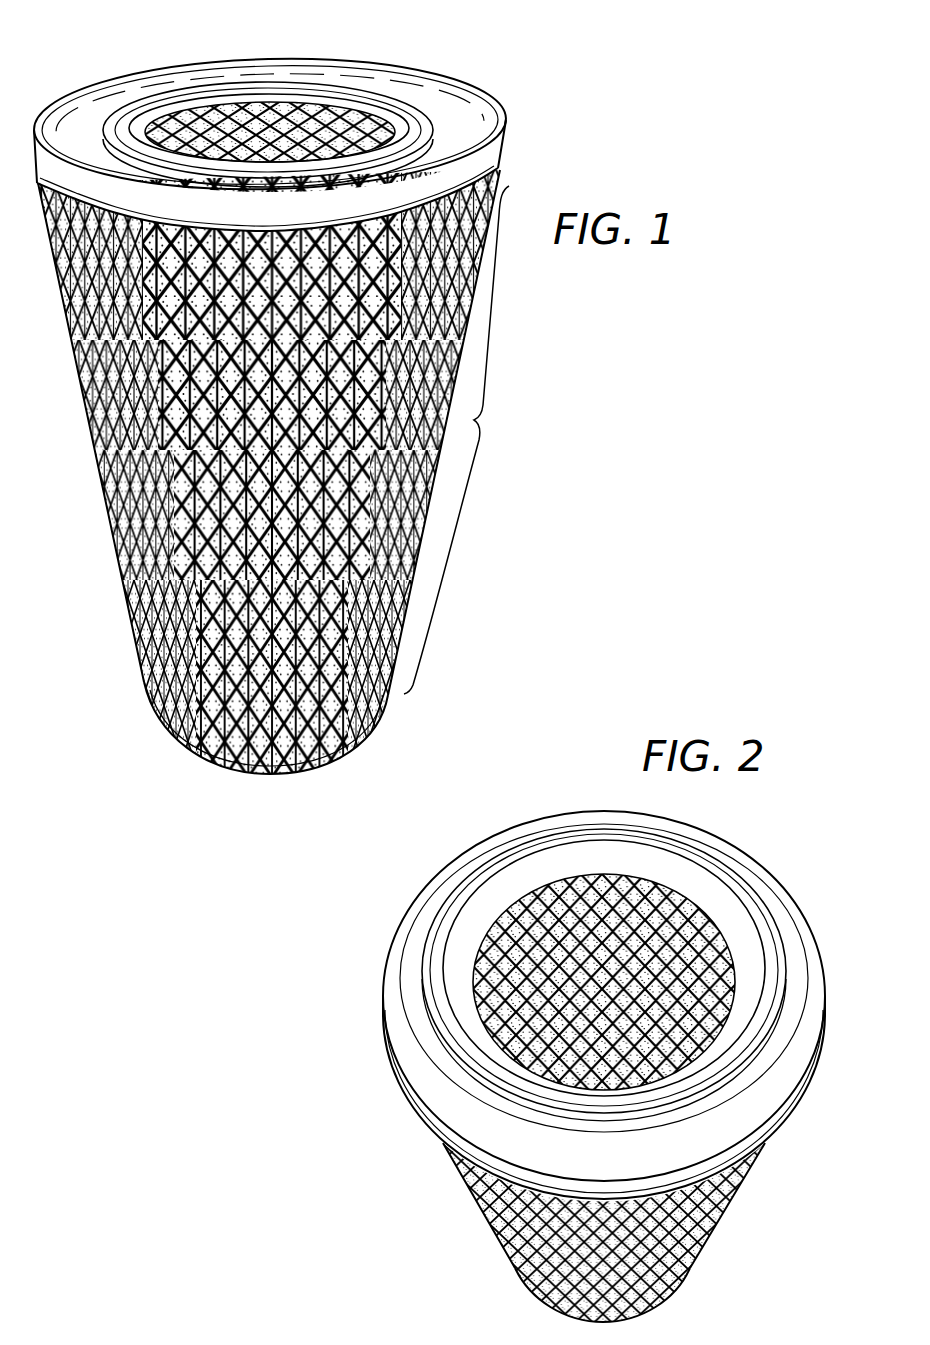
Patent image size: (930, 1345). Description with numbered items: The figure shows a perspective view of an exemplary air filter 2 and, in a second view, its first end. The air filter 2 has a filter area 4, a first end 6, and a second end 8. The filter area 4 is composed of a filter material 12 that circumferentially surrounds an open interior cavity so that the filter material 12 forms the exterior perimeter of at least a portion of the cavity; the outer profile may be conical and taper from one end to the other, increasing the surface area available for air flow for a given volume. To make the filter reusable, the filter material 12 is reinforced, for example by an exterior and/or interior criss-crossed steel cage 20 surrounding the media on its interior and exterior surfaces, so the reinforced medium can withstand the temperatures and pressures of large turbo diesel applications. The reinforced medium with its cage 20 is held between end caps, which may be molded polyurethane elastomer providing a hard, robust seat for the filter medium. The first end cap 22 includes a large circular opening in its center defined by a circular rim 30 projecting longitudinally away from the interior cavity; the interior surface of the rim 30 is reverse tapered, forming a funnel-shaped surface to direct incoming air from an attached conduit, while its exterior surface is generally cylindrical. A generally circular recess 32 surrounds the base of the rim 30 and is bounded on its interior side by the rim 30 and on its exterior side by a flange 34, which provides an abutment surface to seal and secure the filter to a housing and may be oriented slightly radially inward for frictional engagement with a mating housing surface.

In FIG. 1, the air filter 2 is at (507, 67).
In FIG. 1, the filter area 4 is at (499, 418).
In FIG. 1, the first end 6 is at (158, 748).
In FIG. 1, the second end 8 is at (99, 72).
In FIG. 1, the filter material 12 is at (170, 632).
In FIG. 1, the cage 20 is at (230, 128).
In FIG. 2, the first end cap 22 is at (755, 835).
In FIG. 2, the rim 30 is at (543, 862).
In FIG. 2, the recess 32 is at (435, 942).
In FIG. 2, the flange 34 is at (408, 985).